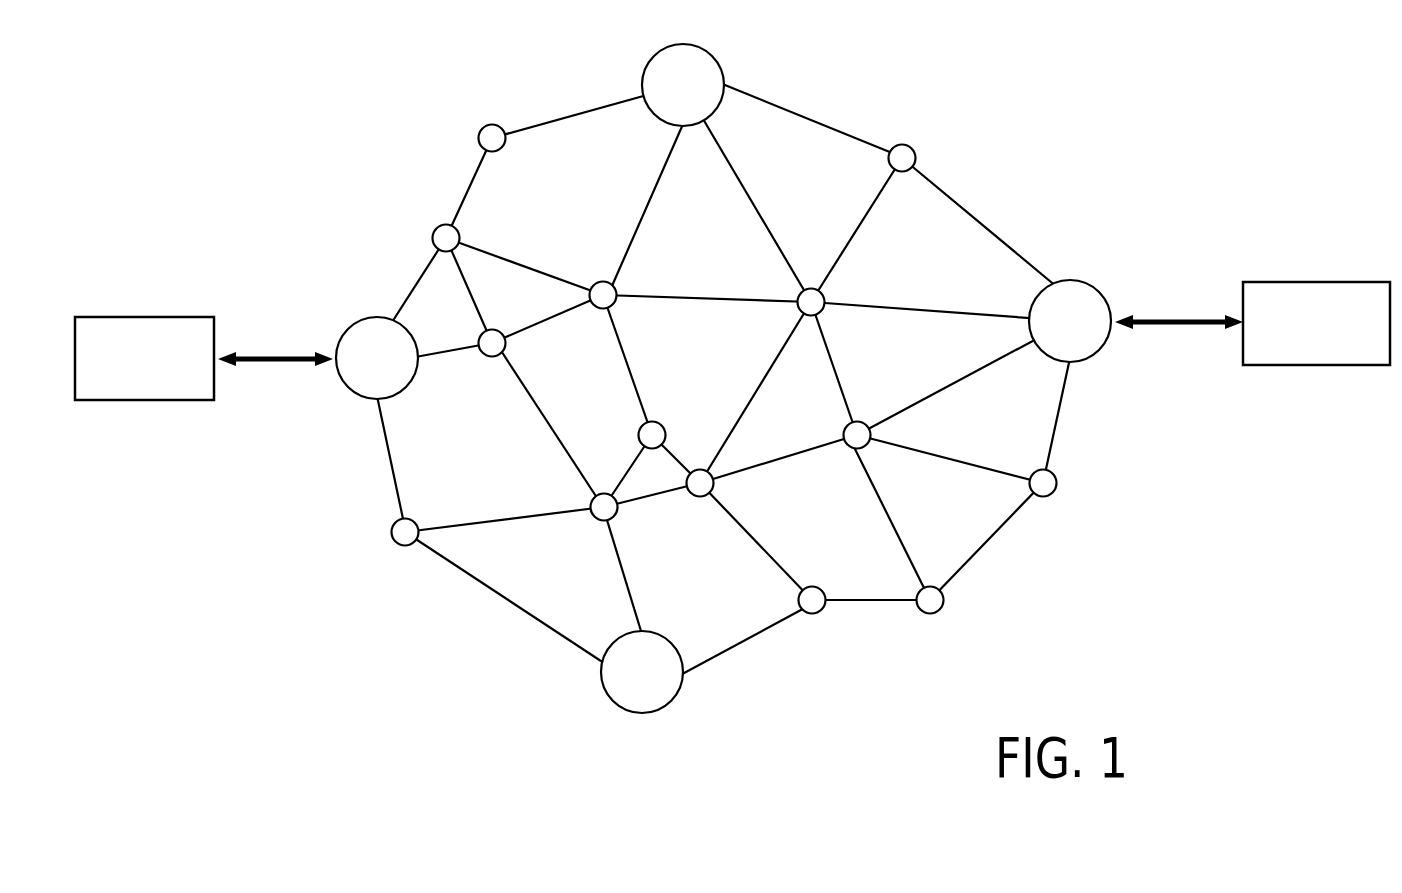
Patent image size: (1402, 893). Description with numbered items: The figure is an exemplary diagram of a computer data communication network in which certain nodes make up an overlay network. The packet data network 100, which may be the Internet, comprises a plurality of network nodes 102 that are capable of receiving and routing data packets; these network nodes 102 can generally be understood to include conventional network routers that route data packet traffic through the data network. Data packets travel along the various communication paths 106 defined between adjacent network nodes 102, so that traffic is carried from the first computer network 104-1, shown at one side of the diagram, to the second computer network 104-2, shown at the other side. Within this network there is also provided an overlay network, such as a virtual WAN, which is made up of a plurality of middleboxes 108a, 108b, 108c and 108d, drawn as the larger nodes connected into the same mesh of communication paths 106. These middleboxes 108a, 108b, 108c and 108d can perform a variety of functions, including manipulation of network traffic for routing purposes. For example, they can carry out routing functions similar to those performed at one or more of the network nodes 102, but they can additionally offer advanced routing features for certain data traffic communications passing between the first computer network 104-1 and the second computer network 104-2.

The packet data network 100 is at (341, 118).
The network node 102 is at (483, 128).
The first computer network 104-1 is at (162, 317).
The second computer network 104-2 is at (1243, 282).
The communication path 106 is at (575, 116).
The middlebox 108a is at (352, 331).
The middlebox 108b is at (620, 646).
The middlebox 108c is at (650, 60).
The middlebox 108d is at (1030, 304).